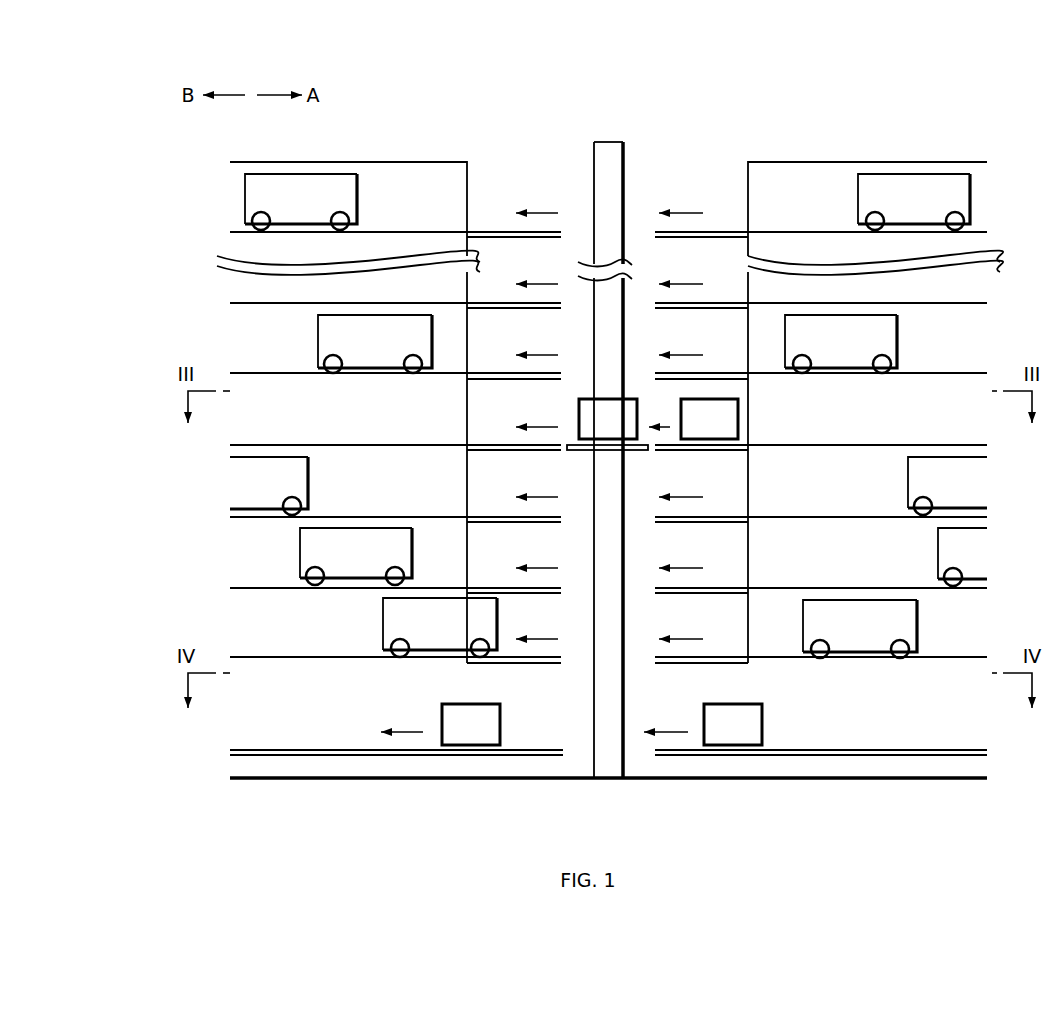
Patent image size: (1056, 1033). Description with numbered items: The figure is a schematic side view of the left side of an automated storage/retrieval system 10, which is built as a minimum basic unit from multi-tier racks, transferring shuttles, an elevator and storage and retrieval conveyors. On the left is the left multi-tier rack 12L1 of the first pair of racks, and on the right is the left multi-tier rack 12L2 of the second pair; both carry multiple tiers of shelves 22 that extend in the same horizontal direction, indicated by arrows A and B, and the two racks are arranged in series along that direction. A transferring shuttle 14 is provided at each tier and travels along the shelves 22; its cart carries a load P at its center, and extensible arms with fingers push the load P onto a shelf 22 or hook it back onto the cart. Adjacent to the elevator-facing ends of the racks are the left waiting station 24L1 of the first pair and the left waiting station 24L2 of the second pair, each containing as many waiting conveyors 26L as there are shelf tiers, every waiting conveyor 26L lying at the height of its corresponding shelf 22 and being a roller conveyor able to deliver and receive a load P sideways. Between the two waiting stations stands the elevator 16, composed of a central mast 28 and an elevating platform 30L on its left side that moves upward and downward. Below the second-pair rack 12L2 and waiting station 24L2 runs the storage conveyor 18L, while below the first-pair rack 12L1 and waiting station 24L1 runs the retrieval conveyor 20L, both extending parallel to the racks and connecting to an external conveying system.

The automated storage/retrieval system 10 is at (588, 104).
The left multi-tier rack of the first pair 12L1 is at (449, 157).
The left multi-tier rack of the second pair 12L2 is at (884, 157).
The transferring shuttle 14 is at (318, 182).
The elevator 16 is at (631, 184).
The storage conveyor 18L is at (712, 756).
The retrieval conveyor 20L is at (332, 757).
The shelves 22 is at (828, 231).
The left waiting station of the first pair 24L1 is at (513, 182).
The left waiting station of the second pair 24L2 is at (698, 156).
The waiting conveyor 26L is at (708, 231).
The mast 28 is at (613, 205).
The elevating platform 30L is at (608, 451).
The load P is at (588, 421).